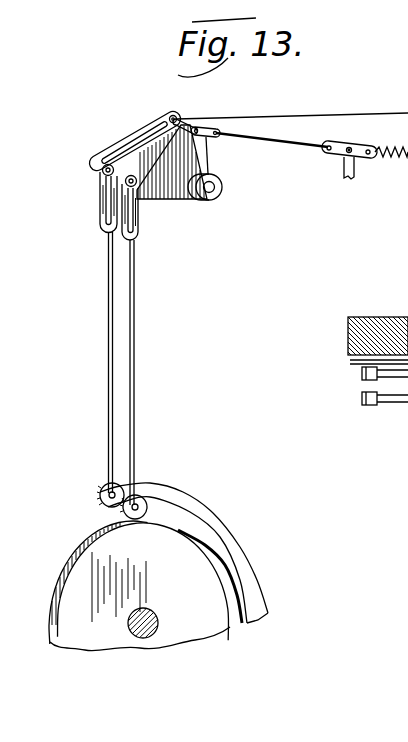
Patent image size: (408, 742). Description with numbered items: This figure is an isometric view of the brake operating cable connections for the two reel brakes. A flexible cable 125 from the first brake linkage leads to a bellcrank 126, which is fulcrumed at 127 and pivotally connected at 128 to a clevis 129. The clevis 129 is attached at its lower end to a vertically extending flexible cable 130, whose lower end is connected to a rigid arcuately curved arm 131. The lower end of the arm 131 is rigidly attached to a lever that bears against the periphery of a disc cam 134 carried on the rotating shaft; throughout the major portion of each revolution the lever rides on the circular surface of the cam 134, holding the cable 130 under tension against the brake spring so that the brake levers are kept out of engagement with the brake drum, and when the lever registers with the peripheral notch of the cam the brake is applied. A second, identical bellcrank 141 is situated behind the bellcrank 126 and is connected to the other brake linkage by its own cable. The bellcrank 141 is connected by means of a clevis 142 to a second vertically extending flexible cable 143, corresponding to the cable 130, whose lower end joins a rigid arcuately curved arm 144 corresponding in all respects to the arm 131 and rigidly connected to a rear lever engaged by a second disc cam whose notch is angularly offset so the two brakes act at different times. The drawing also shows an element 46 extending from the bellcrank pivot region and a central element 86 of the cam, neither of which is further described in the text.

The connecting rod 46 is at (292, 116).
The wheel hub shaft 86 is at (157, 618).
The flexible cable 125 is at (290, 136).
The bellcrank 126 is at (210, 157).
The fulcrum 127 is at (221, 188).
The pivotal connection 128 is at (140, 190).
The clevis 129 is at (138, 224).
The vertically extending flexible cable 130 is at (135, 377).
The rigid arcuately curved arm 131 is at (213, 540).
The disc cam 134 is at (160, 550).
The bellcrank 141 is at (138, 132).
The clevis 142 is at (103, 221).
The vertically extending flexible cable 143 is at (110, 330).
The rigid arcuately curved arm 144 is at (160, 484).